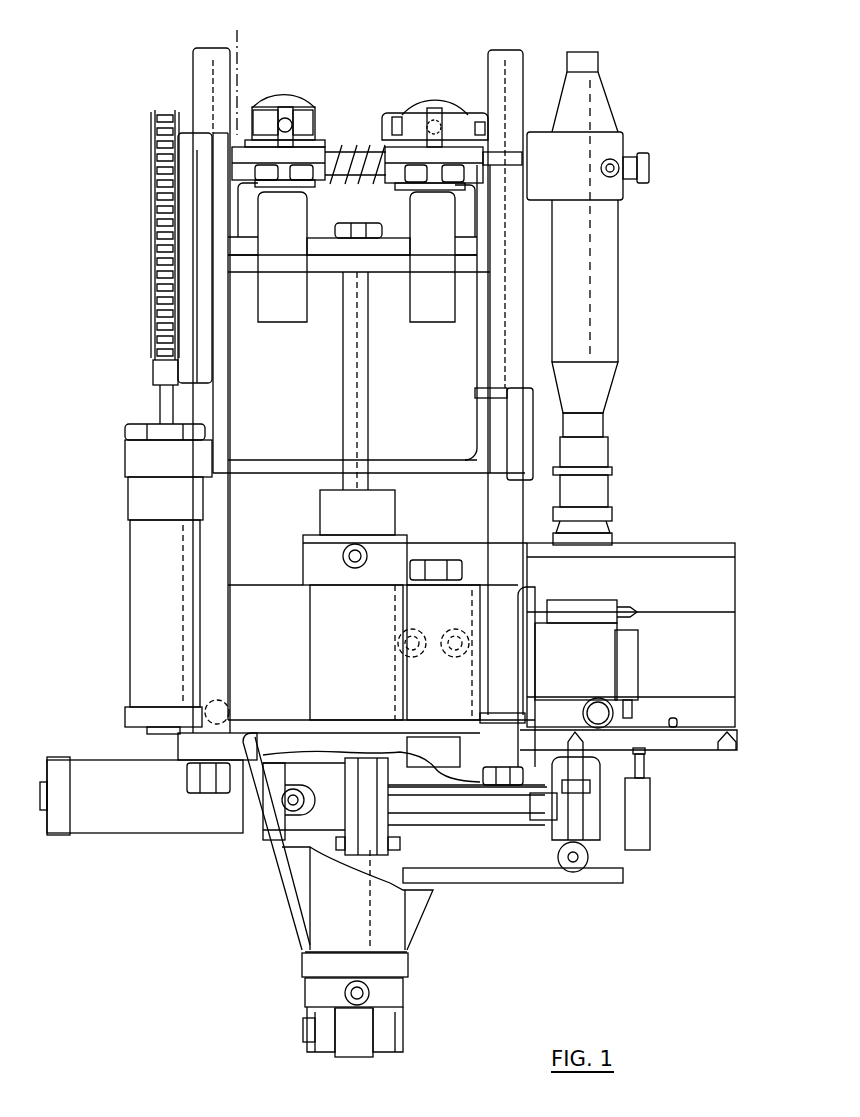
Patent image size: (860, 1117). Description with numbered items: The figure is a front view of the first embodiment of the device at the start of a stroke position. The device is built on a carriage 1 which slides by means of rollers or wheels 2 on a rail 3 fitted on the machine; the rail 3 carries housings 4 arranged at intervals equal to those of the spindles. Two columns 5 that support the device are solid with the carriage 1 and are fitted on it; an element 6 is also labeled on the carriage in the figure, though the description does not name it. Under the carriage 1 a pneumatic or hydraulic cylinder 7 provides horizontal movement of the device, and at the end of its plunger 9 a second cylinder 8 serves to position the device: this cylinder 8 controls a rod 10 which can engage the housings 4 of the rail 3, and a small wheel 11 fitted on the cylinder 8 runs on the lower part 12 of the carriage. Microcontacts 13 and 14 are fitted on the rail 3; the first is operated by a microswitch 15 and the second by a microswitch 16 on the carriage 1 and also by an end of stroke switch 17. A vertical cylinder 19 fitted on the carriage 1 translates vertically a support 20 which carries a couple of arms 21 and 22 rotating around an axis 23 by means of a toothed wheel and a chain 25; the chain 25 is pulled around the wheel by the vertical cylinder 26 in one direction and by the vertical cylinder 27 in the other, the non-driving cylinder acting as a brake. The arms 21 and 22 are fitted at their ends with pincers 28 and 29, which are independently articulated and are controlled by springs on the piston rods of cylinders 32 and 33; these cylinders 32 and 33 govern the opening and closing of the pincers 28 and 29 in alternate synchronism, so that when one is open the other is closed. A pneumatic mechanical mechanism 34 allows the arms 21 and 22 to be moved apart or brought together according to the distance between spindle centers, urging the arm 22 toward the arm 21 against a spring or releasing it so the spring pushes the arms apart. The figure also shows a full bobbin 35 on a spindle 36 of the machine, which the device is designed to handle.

The carriage 1 is at (265, 870).
The rollers or wheels 2 is at (138, 700).
The rail 3 is at (700, 740).
The housings 4 is at (724, 752).
The columns 5 is at (197, 65).
The support plate 6 is at (178, 748).
The cylinder 7 is at (138, 818).
The cylinder 8 is at (598, 865).
The plunger 9 is at (467, 803).
The rod 10 is at (590, 788).
The small wheel 11 is at (573, 867).
The lower part of the carriage 12 is at (515, 880).
The microcontact 13 is at (647, 755).
The microcontact 14 is at (676, 727).
The microswitch 15 is at (652, 823).
The microswitch 16 is at (630, 700).
The end of stroke switch 17 is at (628, 612).
The vertical cylinder 19 is at (130, 648).
The support 20 is at (125, 465).
The arm 21 is at (146, 235).
The arm 22 is at (355, 138).
The axis 23 is at (356, 100).
The chain 25 is at (150, 333).
The vertical cylinder 26 is at (130, 568).
The vertical cylinder 27 is at (130, 612).
The pincer 28 is at (238, 69).
The pincer 29 is at (393, 113).
The cylinder 32 is at (290, 100).
The cylinder 33 is at (441, 92).
The pneumatic mechanical mechanism 34 is at (352, 145).
The full bobbin 35 is at (605, 258).
The spindle 36 is at (618, 490).